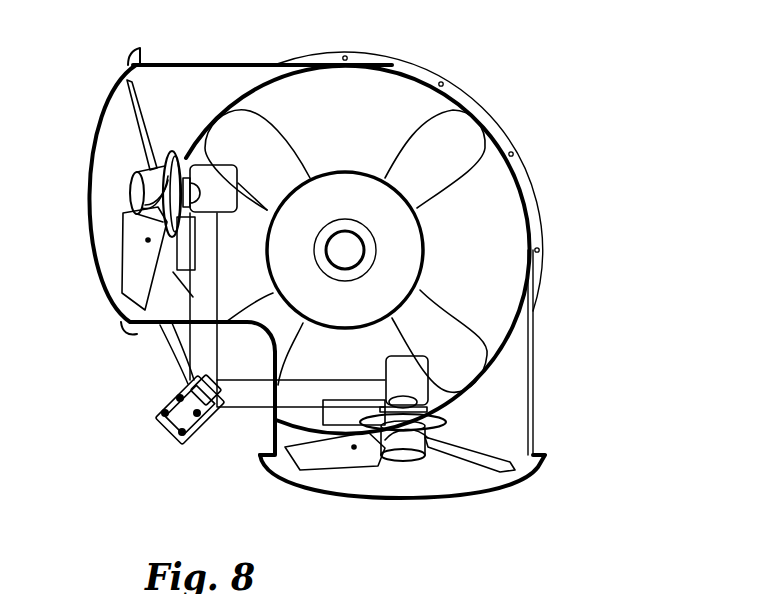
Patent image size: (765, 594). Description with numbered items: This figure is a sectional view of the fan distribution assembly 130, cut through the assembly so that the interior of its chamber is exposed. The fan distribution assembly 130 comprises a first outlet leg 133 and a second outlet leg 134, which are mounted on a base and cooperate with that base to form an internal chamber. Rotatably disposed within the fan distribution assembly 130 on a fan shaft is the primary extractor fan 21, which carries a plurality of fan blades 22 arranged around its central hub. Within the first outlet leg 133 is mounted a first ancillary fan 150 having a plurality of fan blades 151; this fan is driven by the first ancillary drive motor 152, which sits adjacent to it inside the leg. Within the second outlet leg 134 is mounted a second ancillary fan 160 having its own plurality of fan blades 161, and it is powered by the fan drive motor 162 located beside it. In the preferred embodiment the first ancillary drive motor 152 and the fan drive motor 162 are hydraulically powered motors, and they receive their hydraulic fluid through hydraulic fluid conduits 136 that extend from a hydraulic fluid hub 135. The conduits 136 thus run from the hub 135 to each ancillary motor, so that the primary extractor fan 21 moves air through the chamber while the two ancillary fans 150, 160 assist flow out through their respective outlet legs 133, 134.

The primary extractor fan 21 is at (402, 250).
The fan blades 22 is at (262, 147).
The fan distribution assembly 130 is at (540, 150).
The first outlet leg 133 is at (535, 402).
The second outlet leg 134 is at (229, 65).
The hydraulic fluid hub 135 is at (168, 428).
The hydraulic fluid conduits 136 is at (200, 340).
The first ancillary fan 150 is at (400, 462).
The fan blades 151 is at (306, 458).
The first ancillary drive motor 152 is at (418, 375).
The second ancillary fan 160 is at (130, 192).
The fan blades 161 is at (130, 105).
The fan drive motor 162 is at (215, 165).